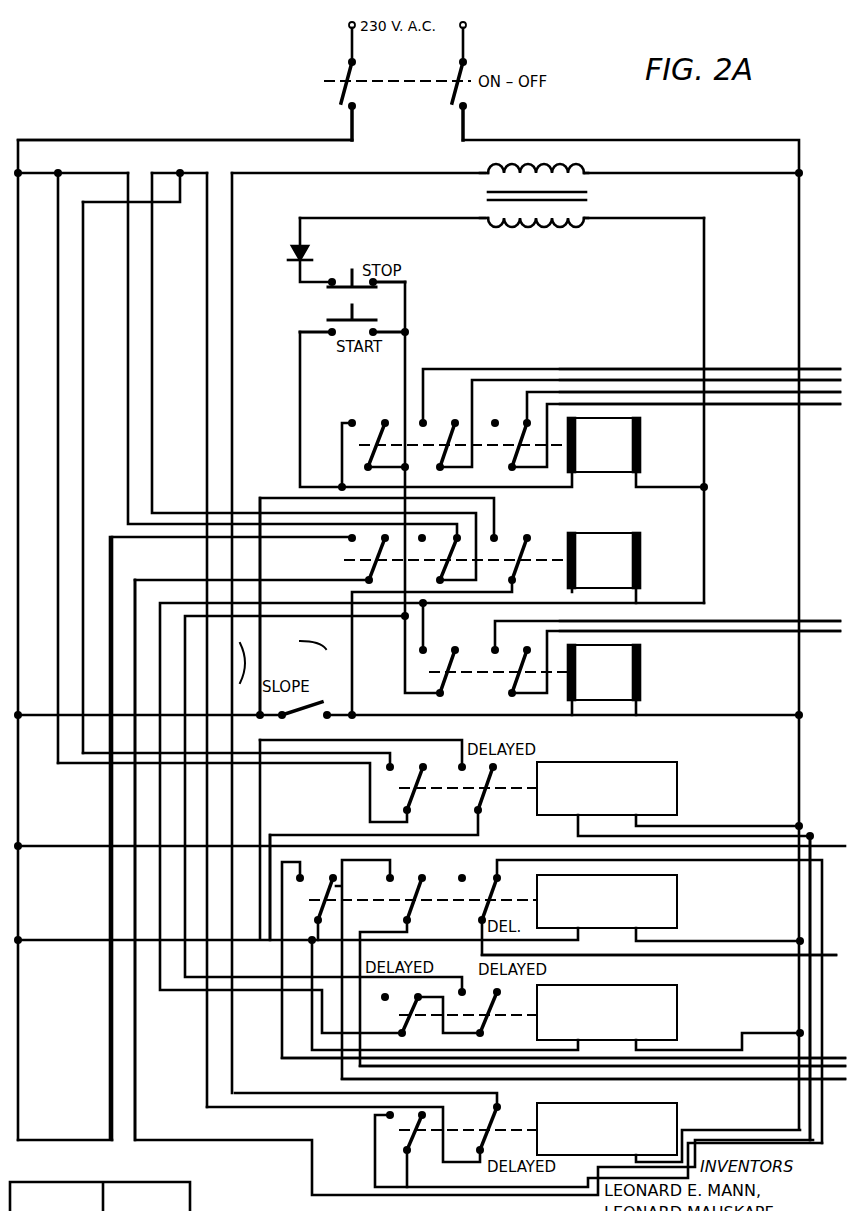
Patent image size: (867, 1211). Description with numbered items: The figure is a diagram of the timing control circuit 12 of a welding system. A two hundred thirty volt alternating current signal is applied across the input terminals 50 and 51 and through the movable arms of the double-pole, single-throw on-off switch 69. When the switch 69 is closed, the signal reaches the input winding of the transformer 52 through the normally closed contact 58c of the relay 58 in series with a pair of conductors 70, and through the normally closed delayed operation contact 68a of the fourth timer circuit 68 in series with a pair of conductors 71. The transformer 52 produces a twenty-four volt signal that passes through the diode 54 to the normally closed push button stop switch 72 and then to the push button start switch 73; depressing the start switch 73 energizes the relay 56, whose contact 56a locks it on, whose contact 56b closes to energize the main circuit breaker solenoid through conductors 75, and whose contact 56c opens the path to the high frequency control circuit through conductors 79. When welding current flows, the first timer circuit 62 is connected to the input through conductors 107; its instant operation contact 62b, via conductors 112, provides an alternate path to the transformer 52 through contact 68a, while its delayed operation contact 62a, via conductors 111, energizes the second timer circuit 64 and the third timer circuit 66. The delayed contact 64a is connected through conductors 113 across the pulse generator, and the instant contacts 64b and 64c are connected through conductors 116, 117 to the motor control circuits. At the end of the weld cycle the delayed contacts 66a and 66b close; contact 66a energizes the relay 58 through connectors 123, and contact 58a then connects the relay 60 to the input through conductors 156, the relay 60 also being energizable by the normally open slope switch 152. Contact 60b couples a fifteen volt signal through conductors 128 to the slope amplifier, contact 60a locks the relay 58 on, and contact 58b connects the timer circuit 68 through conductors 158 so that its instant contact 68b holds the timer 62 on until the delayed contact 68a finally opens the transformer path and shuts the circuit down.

The timing control circuit 12 is at (122, 96).
The input terminal 50 is at (348, 25).
The input terminal 51 is at (467, 25).
The transformer 52 is at (590, 195).
The diode 54 is at (294, 252).
The relay 56 is at (642, 448).
The C contact 56a is at (375, 422).
The C contact 56b is at (455, 410).
The C contact 56c is at (520, 422).
The relay 58 is at (642, 563).
The C contact 58a is at (520, 575).
The C contact 58b is at (375, 555).
The C contact 58c is at (447, 546).
The relay 60 is at (642, 675).
The C contact 60a is at (441, 658).
The C contact 60b is at (515, 690).
The first timer circuit 62 is at (680, 788).
The delayed operation C contact 62a is at (484, 800).
The instant operation C contact 62b is at (412, 790).
The second timer circuit 64 is at (680, 903).
The delayed operation C contact 64a is at (480, 918).
The instant operation C contact 64b is at (405, 918).
The instant operation C contact 64c is at (350, 895).
The third timer circuit 66 is at (680, 1013).
The delayed operation C contact 66a is at (486, 1020).
The delayed operation C contact 66b is at (405, 1015).
The fourth timer circuit 68 is at (680, 1112).
The delayed operation C contact 68a is at (484, 1135).
The C contact 68b is at (402, 1132).
The on-off switch 69 is at (342, 100).
The conductors 70 is at (158, 338).
The conductors 71 is at (236, 328).
The push button stop switch 72 is at (344, 282).
The push button start switch 73 is at (344, 317).
The conductors 75 is at (831, 354).
The conductors 79 is at (824, 410).
The conductors 107 is at (828, 829).
The conductors 111 is at (276, 838).
The conductors 112 is at (98, 328).
The conductors 113 is at (833, 862).
The conductors 116 is at (762, 1085).
The conductors 117 is at (838, 1062).
The connectors 123 is at (196, 998).
The conductors 128 is at (826, 610).
The slope switch 152 is at (329, 702).
The conductors 156 is at (350, 641).
The conductors 158 is at (108, 1060).